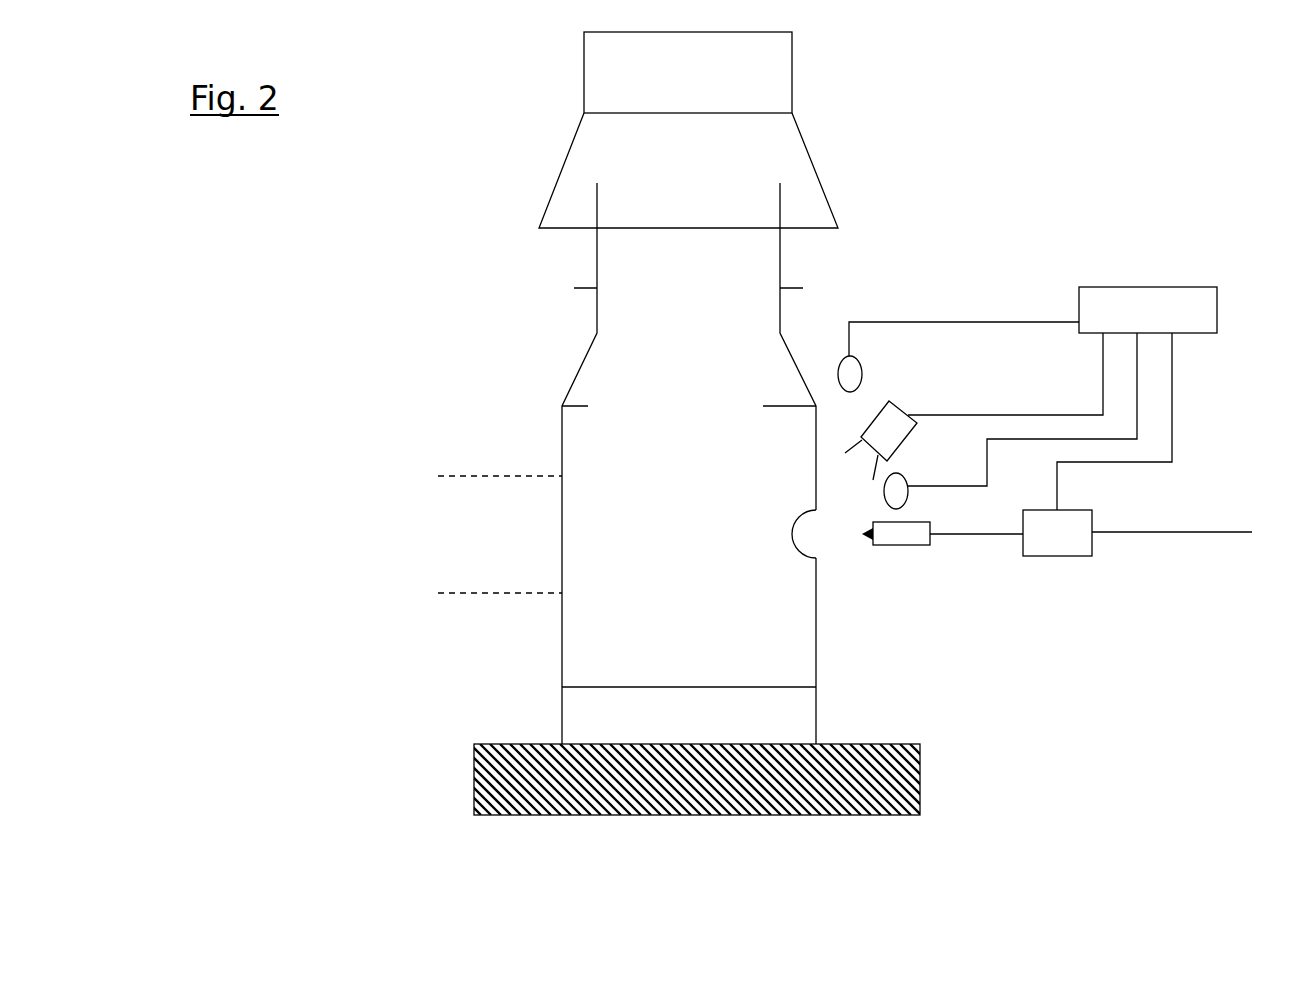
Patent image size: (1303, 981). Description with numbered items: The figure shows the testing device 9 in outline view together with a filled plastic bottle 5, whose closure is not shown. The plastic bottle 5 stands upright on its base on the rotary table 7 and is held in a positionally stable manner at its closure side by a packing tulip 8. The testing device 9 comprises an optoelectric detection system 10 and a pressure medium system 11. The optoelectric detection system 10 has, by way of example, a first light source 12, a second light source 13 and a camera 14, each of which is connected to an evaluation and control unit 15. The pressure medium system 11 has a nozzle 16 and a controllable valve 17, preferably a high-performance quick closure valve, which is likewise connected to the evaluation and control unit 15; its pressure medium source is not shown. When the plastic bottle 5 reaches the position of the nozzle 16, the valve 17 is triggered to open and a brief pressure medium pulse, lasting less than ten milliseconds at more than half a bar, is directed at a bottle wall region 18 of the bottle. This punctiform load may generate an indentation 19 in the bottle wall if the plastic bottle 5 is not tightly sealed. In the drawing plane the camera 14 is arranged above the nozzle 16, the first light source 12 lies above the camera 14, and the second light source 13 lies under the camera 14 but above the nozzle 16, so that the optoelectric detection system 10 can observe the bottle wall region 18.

The plastic bottle 5 is at (564, 629).
The rotary table 7 is at (920, 815).
The packing tulip 8 is at (596, 77).
The testing device 9 is at (1051, 232).
The optoelectric detection system 10 is at (987, 422).
The pressure medium system 11 is at (1112, 572).
The first light source 12 is at (868, 364).
The second light source 13 is at (918, 500).
The camera 14 is at (918, 401).
The evaluation and control unit 15 is at (1137, 398).
The nozzle 16 is at (907, 533).
The controllable valve 17 is at (1137, 533).
The bottle wall region 18 is at (483, 486).
The indentation 19 is at (772, 535).